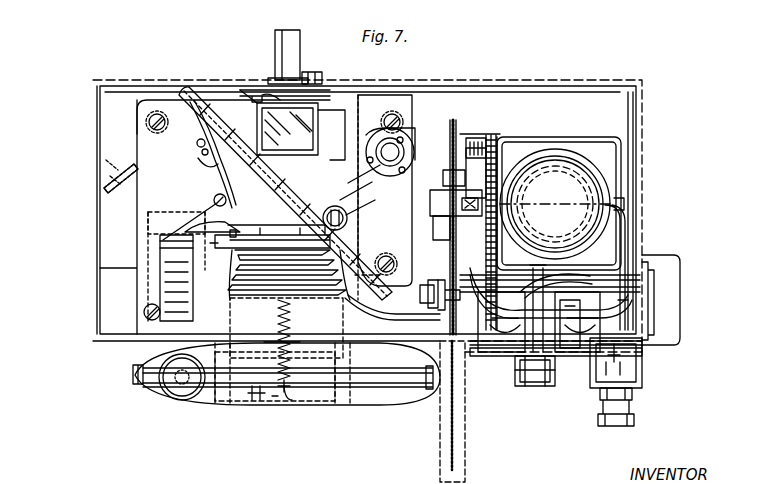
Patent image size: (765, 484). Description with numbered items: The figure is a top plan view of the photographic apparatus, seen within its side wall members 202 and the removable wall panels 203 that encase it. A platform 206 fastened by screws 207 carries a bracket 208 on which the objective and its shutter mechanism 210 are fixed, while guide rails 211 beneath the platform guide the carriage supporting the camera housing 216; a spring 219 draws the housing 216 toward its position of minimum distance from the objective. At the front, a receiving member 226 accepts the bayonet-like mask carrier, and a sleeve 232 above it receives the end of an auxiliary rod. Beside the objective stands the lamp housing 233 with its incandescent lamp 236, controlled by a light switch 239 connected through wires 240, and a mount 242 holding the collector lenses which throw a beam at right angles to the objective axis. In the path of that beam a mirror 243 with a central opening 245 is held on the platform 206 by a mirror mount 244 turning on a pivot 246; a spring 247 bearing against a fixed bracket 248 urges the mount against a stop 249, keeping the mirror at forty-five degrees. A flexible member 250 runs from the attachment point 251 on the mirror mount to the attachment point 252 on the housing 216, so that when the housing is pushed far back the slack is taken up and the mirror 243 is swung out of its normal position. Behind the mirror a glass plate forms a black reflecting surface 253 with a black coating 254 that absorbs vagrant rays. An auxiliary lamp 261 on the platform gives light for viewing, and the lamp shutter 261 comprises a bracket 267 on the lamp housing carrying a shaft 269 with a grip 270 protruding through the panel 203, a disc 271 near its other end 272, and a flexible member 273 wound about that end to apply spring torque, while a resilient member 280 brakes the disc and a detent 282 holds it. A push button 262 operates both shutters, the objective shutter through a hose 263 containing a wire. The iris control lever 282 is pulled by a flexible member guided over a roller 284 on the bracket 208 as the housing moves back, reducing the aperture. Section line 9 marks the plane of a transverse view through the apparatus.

The section line 9- 9 is at (63, 92).
The side wall members 202 is at (638, 134).
The removable wall panels 203 is at (640, 178).
The platform 206 is at (136, 135).
The screws 207 is at (159, 113).
The bracket 208 is at (245, 230).
The shutter mechanism 210 is at (285, 205).
The guide rails 211 is at (350, 243).
The camera housing 216 is at (385, 400).
The spring 219 is at (318, 320).
The receiving member 226 is at (317, 74).
The sleeve 232 is at (300, 38).
The lamp housing 233 is at (582, 140).
The incandescent lamp 236 is at (582, 178).
The light switch 239 is at (536, 386).
The wires 240 is at (630, 246).
The mount 242 is at (482, 138).
The mirror 243 is at (255, 108).
The mirror mount 244 is at (322, 150).
The central opening 245 is at (233, 222).
The pivot 246 is at (350, 212).
The spring 247 is at (214, 200).
The fixed bracket 248 is at (174, 266).
The stop 249 is at (248, 92).
The flexible member 250 is at (212, 160).
The mirror mount connection 251 is at (197, 143).
The camera housing connection 252 is at (244, 402).
The black reflecting surface 253 is at (196, 160).
The black coating 254 is at (133, 163).
The lamp shutter 261 is at (412, 148).
The push button 262 is at (640, 408).
The hose 263 is at (488, 340).
The bracket 267 is at (572, 287).
The shaft 269 is at (578, 352).
The grip 270 is at (683, 302).
The disc 271 is at (455, 427).
The shaft end 272 is at (420, 292).
The flexible member 273 is at (438, 300).
The resilient member 280 is at (440, 230).
The control lever 282 is at (272, 262).
The roller 284 is at (514, 306).